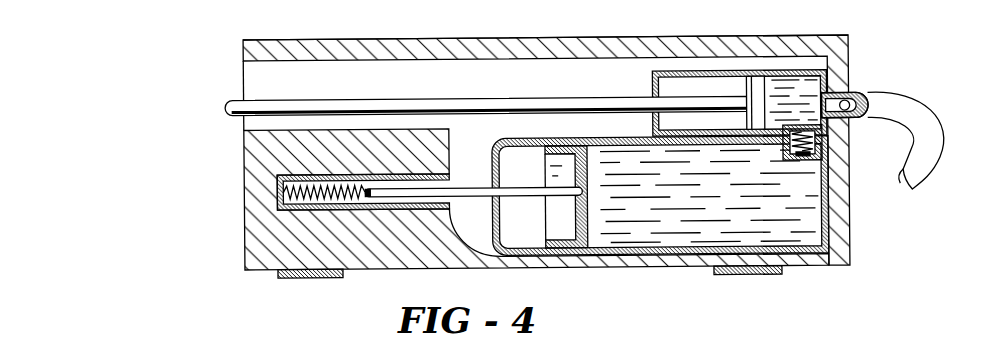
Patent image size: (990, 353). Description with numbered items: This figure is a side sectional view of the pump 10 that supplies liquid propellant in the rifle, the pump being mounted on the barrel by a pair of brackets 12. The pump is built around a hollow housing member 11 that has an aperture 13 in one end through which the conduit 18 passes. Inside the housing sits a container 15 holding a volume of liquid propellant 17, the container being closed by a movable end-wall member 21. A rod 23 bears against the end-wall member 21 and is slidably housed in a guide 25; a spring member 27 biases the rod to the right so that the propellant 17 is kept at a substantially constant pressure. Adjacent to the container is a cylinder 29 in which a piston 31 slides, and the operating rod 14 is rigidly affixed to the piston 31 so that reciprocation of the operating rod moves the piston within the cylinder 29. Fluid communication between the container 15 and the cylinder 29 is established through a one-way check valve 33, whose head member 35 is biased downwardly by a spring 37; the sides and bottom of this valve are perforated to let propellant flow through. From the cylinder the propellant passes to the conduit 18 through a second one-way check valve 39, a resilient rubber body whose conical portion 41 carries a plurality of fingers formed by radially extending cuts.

The pump 10 is at (366, 34).
The housing member 11 is at (553, 38).
The brackets 12 is at (306, 277).
The aperture 13 is at (851, 95).
The operating rod 14 is at (236, 98).
The container 15 is at (638, 243).
The liquid propellant 17 is at (695, 223).
The conduit 18 is at (925, 155).
The end-wall member 21 is at (594, 216).
The rod 23 is at (470, 186).
The guide 25 is at (385, 208).
The spring member 27 is at (281, 191).
The cylinder 29 is at (797, 72).
The piston 31 is at (757, 90).
The one-way check valve 33 is at (783, 152).
The head member 35 is at (806, 111).
The spring 37 is at (808, 164).
The one-way check valve 39 is at (850, 93).
The conical portion 41 is at (853, 121).